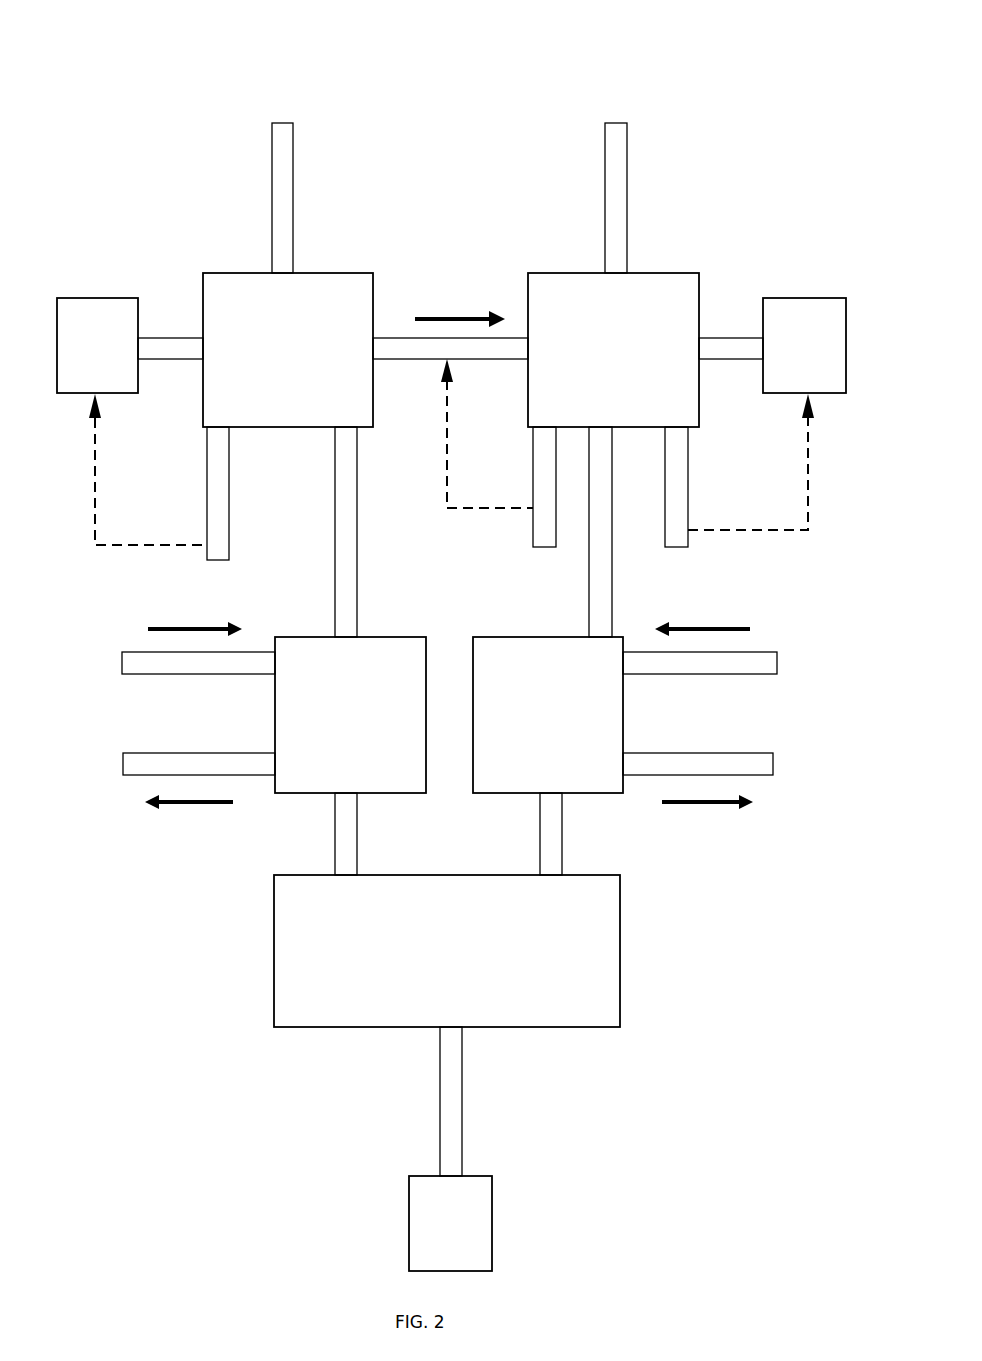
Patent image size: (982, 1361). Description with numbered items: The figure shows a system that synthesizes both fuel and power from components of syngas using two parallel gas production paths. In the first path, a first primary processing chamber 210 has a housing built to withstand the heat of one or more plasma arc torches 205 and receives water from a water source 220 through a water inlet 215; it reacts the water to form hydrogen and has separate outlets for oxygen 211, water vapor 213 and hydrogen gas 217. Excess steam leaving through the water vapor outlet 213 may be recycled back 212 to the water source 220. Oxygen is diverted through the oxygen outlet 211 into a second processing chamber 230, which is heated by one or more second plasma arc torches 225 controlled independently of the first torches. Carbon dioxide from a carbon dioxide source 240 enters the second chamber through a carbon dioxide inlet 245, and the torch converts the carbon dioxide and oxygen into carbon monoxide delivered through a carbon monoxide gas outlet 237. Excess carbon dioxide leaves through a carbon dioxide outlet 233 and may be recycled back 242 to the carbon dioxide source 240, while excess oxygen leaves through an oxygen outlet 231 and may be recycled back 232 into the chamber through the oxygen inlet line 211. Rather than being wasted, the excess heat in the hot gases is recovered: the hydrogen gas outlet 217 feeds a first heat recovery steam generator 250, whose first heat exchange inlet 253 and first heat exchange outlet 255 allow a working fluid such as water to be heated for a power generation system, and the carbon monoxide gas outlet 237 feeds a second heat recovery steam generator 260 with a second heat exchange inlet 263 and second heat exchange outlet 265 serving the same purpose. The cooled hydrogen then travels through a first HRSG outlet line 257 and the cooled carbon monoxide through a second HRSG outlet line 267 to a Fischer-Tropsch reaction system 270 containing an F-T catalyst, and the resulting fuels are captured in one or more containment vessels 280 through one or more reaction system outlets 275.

The plasma arc torches 205 is at (266, 98).
The second plasma arc torches 225 is at (629, 98).
The first primary processing chamber 210 is at (288, 350).
The second processing chamber 230 is at (613, 350).
The water source 220 is at (97, 345).
The carbon dioxide source 240 is at (804, 345).
The water inlet 215 is at (170, 328).
The carbon dioxide inlet 245 is at (731, 335).
The oxygen outlet 211 is at (450, 328).
The water vapor recycle 212 is at (130, 469).
The oxygen recycle 232 is at (487, 433).
The carbon dioxide recycle 242 is at (768, 462).
The water vapor outlet 213 is at (200, 493).
The hydrogen gas outlet 217 is at (329, 532).
The oxygen outlet 231 is at (529, 499).
The carbon dioxide outlet 233 is at (696, 487).
The carbon monoxide gas outlet 237 is at (585, 532).
The first heat recovery steam generator 250 is at (350, 715).
The second heat recovery steam generator 260 is at (548, 715).
The first heat exchange inlet 253 is at (176, 648).
The first heat exchange outlet 255 is at (176, 781).
The second heat exchange inlet 263 is at (721, 649).
The second heat exchange outlet 265 is at (721, 778).
The first HRSG outlet line 257 is at (324, 834).
The second HRSG outlet line 267 is at (567, 834).
The Fischer-Tropsch reaction system 270 is at (447, 951).
The reaction system outlets 275 is at (477, 1101).
The containment vessels 280 is at (450, 1223).